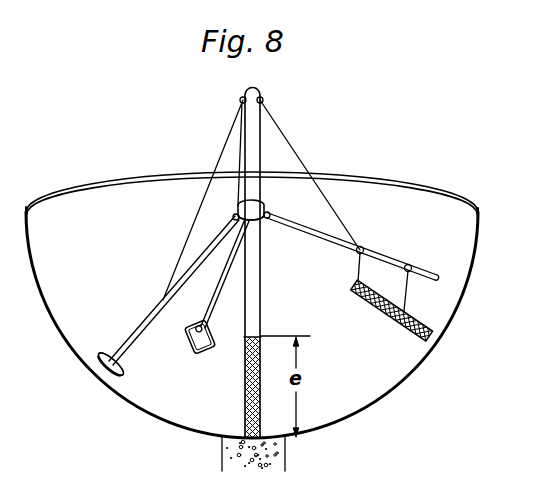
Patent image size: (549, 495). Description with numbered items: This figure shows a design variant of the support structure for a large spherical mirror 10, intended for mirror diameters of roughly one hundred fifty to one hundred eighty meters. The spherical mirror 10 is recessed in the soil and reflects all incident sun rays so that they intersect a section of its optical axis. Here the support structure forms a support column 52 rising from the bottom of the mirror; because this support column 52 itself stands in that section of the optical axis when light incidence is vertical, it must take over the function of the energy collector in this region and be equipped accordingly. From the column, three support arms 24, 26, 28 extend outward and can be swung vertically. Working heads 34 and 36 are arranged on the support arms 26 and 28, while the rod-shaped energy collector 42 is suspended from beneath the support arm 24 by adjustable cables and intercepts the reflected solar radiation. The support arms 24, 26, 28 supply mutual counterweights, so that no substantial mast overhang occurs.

The spherical mirror 10 is at (478, 256).
The support arm 24 is at (322, 228).
The support arm 26 is at (208, 303).
The support arm 28 is at (131, 336).
The working head 34 is at (192, 354).
The working head 36 is at (107, 378).
The energy collector 42 is at (398, 330).
The support column 52 is at (257, 297).